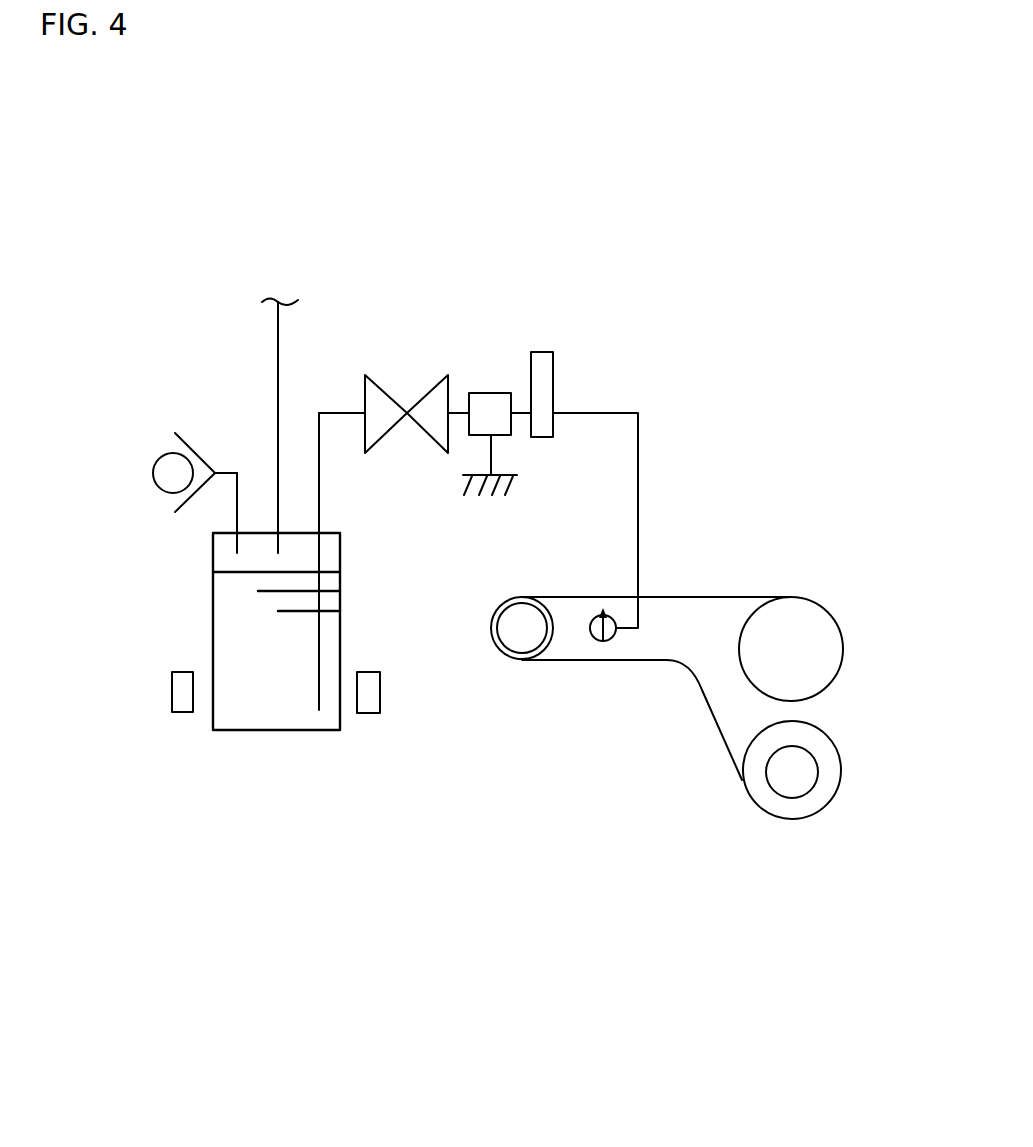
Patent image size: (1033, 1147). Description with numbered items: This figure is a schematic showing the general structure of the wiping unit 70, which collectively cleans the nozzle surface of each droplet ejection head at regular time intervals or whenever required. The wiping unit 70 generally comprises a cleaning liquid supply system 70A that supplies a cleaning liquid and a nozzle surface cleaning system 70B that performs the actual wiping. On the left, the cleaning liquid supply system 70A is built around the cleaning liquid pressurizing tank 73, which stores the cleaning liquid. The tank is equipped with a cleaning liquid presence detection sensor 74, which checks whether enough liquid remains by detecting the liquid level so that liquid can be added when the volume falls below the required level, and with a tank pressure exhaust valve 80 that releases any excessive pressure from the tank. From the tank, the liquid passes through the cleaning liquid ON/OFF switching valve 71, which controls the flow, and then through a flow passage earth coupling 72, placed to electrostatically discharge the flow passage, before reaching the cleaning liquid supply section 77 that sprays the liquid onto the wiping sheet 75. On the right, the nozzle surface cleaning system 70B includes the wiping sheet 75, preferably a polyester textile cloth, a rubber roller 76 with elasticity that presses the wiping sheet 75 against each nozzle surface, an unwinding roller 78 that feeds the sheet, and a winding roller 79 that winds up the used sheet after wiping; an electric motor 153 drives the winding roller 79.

The wiping unit 70 is at (598, 150).
The cleaning liquid supply system 70A is at (443, 263).
The nozzle surface cleaning system 70B is at (789, 463).
The cleaning liquid ON/OFF switching valve 71 is at (390, 390).
The flow passage earth coupling 72 is at (487, 393).
The cleaning liquid pressurizing tank 73 is at (275, 733).
The cleaning liquid presence detection sensor 74 is at (368, 715).
The wiping sheet 75 is at (710, 597).
The roller 76 is at (558, 615).
The cleaning liquid supply section 77 is at (603, 641).
The unwinding roller 78 is at (812, 610).
The winding roller 79 is at (768, 813).
The tank pressure exhaust valve 80 is at (200, 443).
The electric motor 153 is at (805, 792).